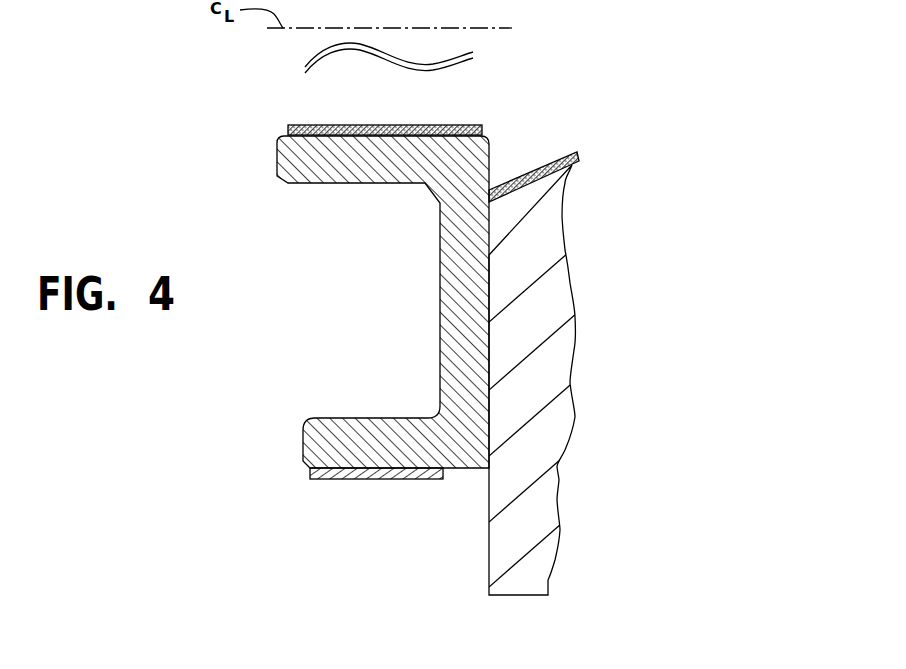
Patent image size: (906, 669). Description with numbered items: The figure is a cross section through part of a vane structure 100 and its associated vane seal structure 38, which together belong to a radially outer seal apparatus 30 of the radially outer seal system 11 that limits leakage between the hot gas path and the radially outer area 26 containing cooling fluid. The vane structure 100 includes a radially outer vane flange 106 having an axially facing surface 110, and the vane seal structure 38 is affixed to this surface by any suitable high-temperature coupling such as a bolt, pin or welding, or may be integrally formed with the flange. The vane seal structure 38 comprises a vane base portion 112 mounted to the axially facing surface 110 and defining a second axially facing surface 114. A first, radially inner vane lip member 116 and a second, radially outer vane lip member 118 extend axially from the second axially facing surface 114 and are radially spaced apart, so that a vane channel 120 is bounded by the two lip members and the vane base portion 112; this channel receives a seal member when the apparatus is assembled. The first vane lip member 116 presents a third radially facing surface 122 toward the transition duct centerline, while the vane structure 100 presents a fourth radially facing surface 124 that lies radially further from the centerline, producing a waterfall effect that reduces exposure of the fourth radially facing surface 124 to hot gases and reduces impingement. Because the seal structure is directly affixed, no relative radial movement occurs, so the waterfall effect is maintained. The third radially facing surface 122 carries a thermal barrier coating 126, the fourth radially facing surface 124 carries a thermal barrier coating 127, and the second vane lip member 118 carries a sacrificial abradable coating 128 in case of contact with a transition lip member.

The radially outer seal system 11 is at (355, 521).
The radially outer area 26 is at (545, 633).
The radially outer seal apparatus 30 is at (303, 486).
The vane seal structure 38 is at (283, 135).
The vane structure 100 is at (561, 484).
The radially outer vane flange 106 is at (545, 567).
The axially facing surface 110 is at (489, 550).
The vane base portion 112 is at (455, 305).
The second axially facing surface 114 is at (440, 352).
The first vane lip member 116 is at (330, 170).
The second vane lip member 118 is at (335, 429).
The vane channel 120 is at (300, 282).
The third radially facing surface 122 is at (415, 125).
The fourth radially facing surface 124 is at (577, 152).
The thermal barrier coating 126 is at (313, 125).
The thermal barrier coating 127 is at (517, 167).
The abradable coating 128 is at (400, 479).